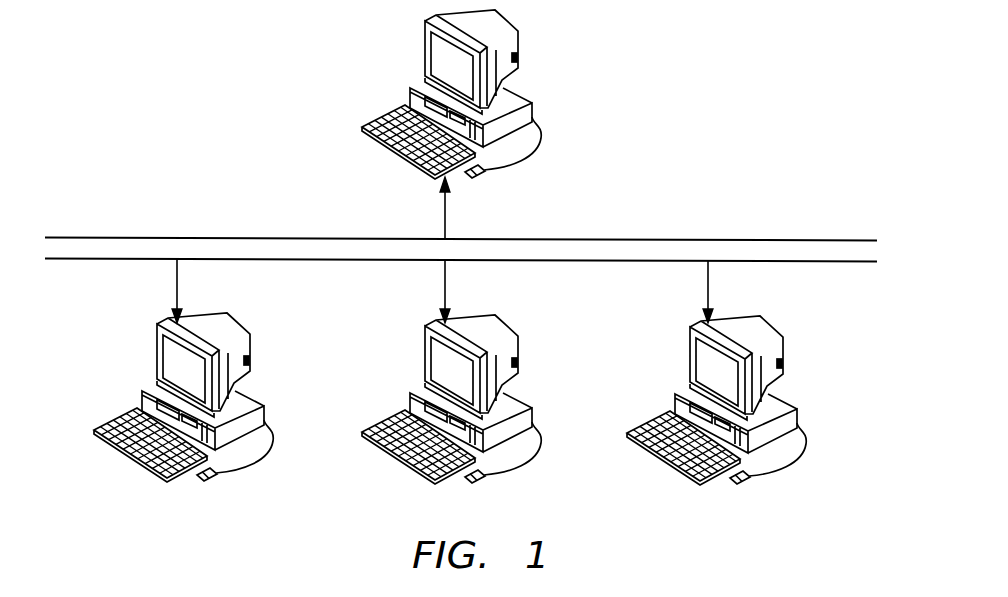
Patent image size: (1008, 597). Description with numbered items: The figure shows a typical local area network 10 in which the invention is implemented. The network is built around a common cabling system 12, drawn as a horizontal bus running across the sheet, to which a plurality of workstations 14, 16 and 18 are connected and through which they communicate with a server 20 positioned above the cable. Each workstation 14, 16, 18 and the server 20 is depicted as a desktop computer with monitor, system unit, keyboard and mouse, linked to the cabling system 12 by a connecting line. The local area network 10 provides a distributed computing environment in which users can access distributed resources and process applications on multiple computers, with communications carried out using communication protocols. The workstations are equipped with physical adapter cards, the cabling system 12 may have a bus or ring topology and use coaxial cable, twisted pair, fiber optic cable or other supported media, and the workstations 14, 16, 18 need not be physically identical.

The local area network 10 is at (125, 162).
The common cabling system 12 is at (730, 239).
The workstation 14 is at (253, 353).
The workstation 16 is at (520, 355).
The workstation 18 is at (785, 356).
The server 20 is at (521, 44).